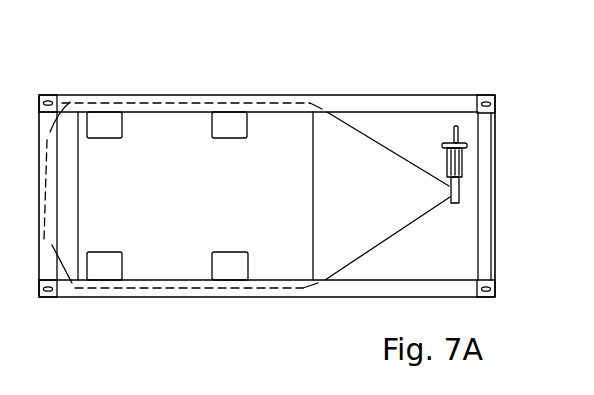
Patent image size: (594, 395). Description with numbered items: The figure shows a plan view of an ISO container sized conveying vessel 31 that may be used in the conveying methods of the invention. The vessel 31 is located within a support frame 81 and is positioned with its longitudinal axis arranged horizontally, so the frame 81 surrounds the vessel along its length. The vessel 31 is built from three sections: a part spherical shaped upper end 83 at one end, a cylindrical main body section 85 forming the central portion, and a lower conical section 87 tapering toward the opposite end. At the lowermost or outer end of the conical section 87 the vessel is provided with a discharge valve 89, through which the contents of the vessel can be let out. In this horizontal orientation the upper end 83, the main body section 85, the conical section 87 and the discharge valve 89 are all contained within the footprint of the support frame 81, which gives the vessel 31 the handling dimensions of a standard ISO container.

The conveying vessel 31 is at (186, 150).
The support frame 81 is at (372, 95).
The part spherical shaped upper end 83 is at (72, 268).
The cylindrical main body section 85 is at (272, 267).
The lower conical section 87 is at (372, 232).
The discharge valve 89 is at (462, 164).